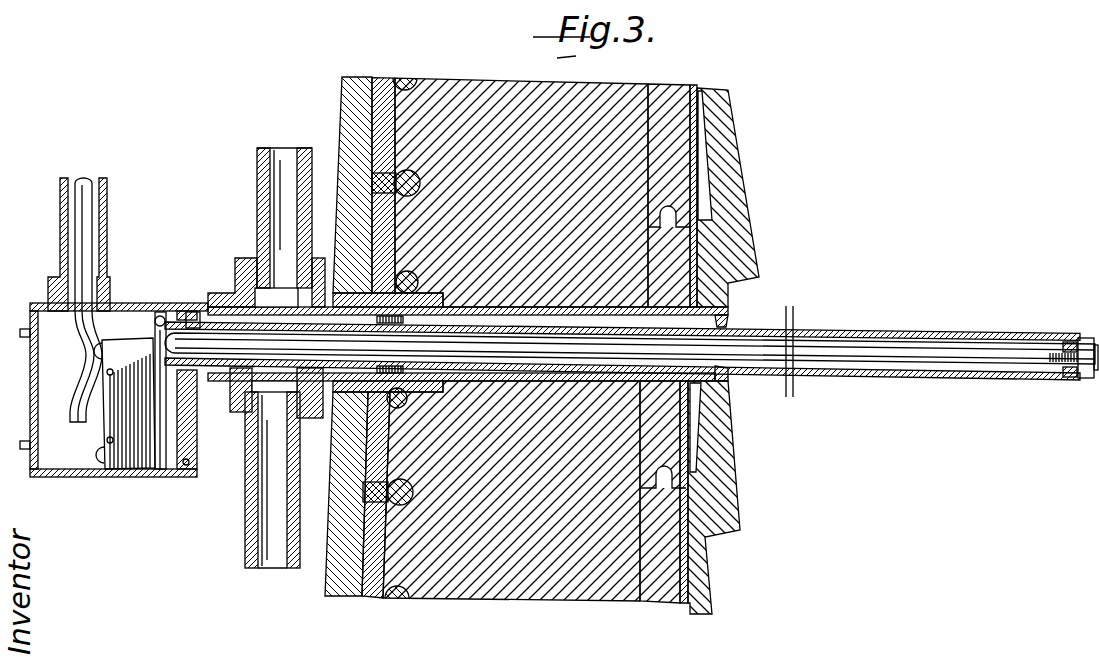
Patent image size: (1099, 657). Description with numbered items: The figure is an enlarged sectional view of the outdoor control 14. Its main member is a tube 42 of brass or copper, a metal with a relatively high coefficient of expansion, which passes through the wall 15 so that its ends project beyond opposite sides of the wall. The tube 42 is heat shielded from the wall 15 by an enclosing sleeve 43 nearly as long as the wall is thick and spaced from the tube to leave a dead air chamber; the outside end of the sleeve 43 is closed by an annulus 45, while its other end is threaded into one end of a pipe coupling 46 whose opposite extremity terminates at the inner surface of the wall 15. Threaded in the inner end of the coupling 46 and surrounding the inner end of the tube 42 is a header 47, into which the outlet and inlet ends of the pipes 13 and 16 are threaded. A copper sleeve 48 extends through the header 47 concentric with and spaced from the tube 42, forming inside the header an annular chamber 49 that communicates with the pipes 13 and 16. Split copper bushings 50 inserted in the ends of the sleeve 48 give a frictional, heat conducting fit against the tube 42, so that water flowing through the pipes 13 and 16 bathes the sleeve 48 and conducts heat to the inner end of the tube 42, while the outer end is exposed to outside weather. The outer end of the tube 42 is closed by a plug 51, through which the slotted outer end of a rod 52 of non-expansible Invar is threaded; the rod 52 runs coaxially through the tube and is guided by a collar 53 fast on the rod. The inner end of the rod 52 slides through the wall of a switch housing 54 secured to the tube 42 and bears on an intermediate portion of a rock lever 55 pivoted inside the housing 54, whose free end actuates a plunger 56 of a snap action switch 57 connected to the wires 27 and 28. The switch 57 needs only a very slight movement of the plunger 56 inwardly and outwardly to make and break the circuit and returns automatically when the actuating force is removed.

The pipe 13 is at (247, 520).
The control 14 is at (827, 315).
The wall 15 is at (737, 160).
The pipe 16 is at (258, 183).
The wire 27 is at (78, 180).
The wire 28 is at (90, 178).
The tube 42 is at (885, 332).
The sleeve 43 is at (558, 308).
The annulus 45 is at (740, 318).
The pipe coupling 46 is at (462, 278).
The header 47 is at (215, 290).
The copper sleeve 48 is at (275, 340).
The annular chamber 49 is at (273, 277).
The split copper bushing 50 is at (190, 303).
The plug 51 is at (1083, 373).
The rod 52 is at (983, 350).
The collar 53 is at (727, 382).
The switch housing 54 is at (182, 443).
The rock lever 55 is at (160, 447).
The plunger 56 is at (153, 470).
The snap action switch 57 is at (110, 470).